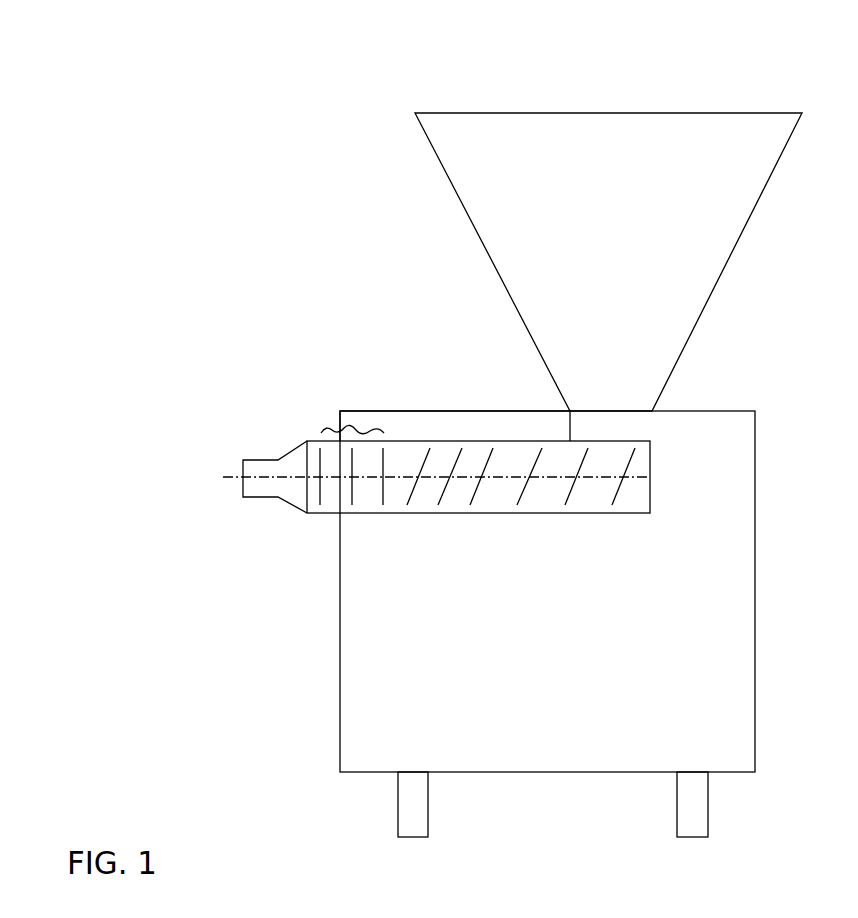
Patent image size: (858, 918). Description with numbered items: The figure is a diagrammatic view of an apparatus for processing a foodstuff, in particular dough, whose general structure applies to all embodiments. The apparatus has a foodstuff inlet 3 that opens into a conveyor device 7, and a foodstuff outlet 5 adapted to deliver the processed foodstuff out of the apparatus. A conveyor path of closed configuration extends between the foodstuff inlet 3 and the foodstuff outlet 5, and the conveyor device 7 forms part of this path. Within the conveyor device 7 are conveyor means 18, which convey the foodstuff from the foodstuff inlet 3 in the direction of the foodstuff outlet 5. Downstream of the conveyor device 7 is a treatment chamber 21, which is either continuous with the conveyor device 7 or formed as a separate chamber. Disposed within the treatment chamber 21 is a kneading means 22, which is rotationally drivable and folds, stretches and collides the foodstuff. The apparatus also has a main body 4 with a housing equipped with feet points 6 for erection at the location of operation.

The foodstuff inlet 3 is at (652, 72).
The main body 4 is at (715, 630).
The foodstuff outlet 5 is at (222, 502).
The feet points 6 is at (695, 815).
The conveyor device 7 is at (680, 461).
The conveyor means 18 is at (505, 443).
The treatment chamber 21 is at (349, 411).
The kneading means 22 is at (320, 518).